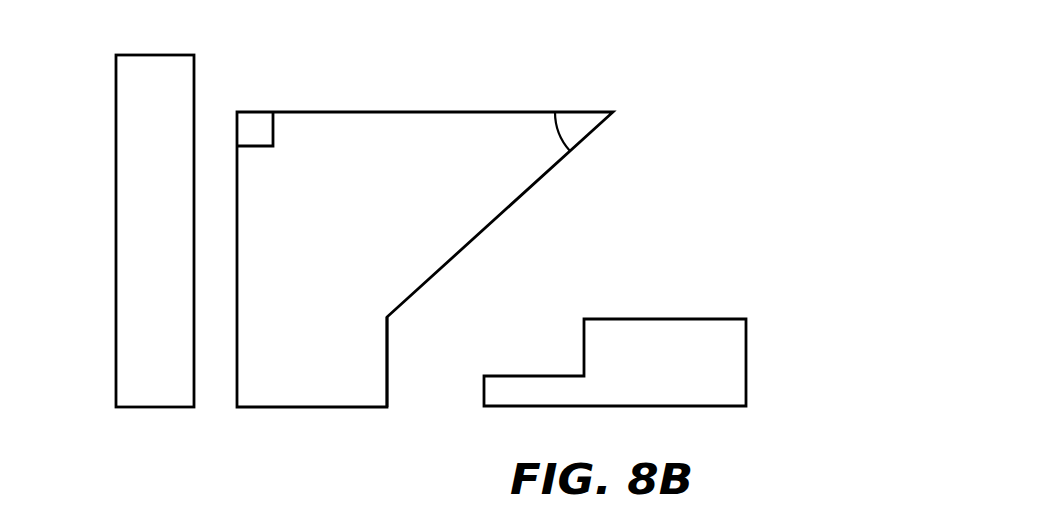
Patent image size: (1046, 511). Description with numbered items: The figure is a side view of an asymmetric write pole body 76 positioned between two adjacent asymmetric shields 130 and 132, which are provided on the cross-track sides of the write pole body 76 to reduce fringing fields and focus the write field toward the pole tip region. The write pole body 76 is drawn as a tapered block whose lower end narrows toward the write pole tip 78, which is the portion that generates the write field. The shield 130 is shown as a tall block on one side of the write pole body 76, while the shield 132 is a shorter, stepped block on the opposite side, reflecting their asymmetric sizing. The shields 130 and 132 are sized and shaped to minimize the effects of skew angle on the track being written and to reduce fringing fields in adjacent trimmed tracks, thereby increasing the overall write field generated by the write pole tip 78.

The asymmetric shield 130 is at (133, 367).
The write pole body 76 is at (362, 230).
The write pole tip 78 is at (383, 370).
The asymmetric shield 132 is at (709, 325).